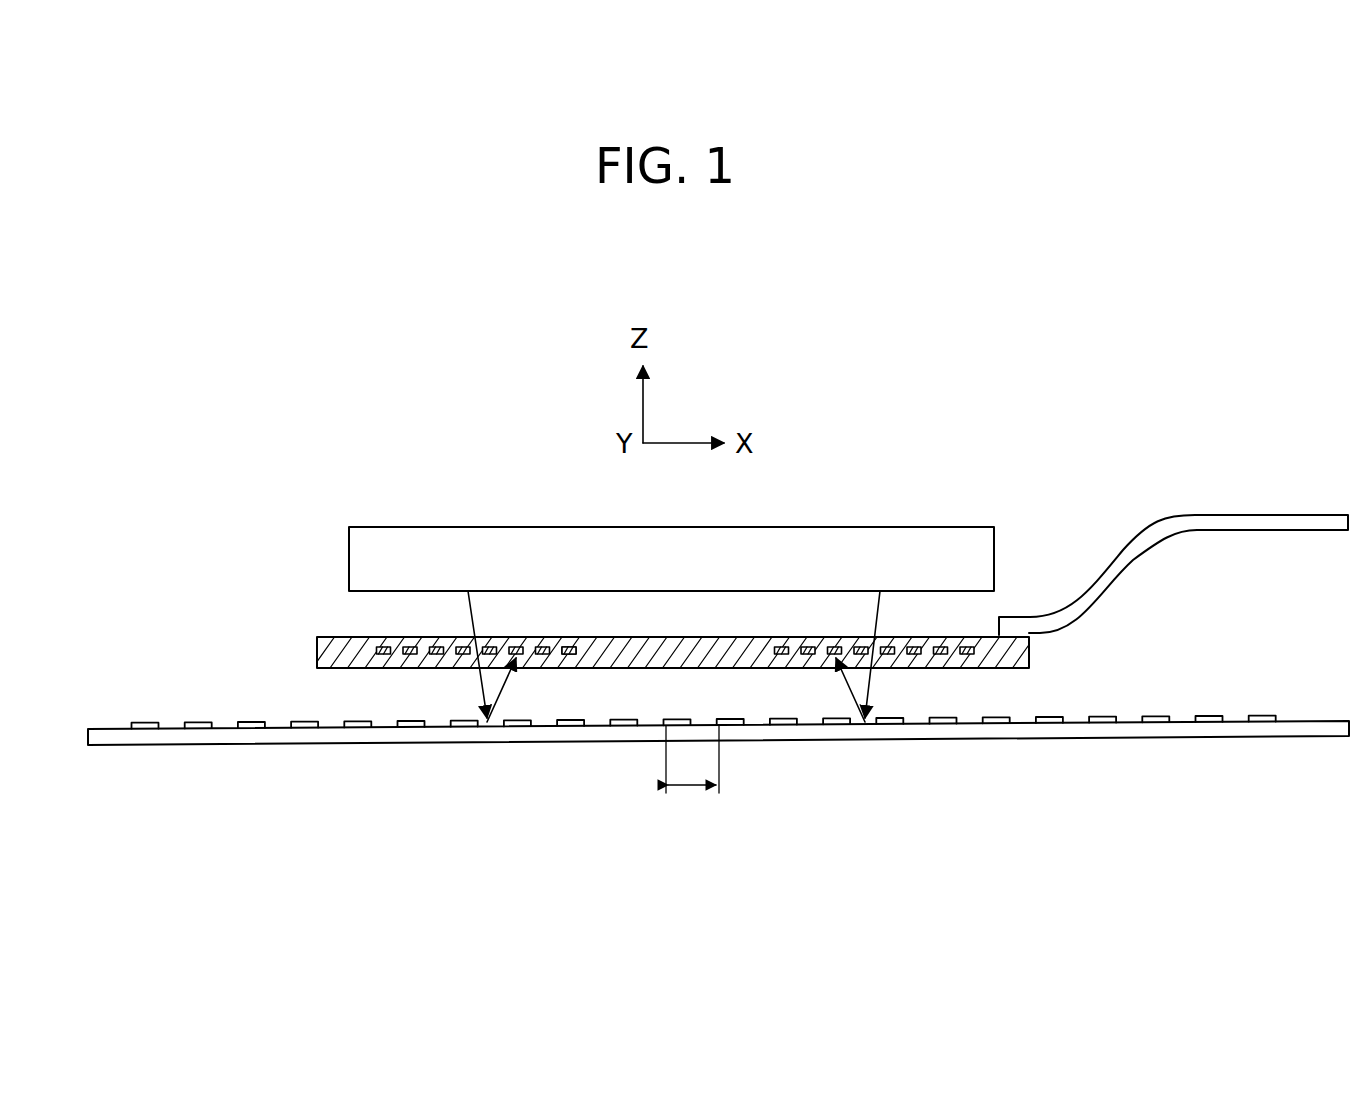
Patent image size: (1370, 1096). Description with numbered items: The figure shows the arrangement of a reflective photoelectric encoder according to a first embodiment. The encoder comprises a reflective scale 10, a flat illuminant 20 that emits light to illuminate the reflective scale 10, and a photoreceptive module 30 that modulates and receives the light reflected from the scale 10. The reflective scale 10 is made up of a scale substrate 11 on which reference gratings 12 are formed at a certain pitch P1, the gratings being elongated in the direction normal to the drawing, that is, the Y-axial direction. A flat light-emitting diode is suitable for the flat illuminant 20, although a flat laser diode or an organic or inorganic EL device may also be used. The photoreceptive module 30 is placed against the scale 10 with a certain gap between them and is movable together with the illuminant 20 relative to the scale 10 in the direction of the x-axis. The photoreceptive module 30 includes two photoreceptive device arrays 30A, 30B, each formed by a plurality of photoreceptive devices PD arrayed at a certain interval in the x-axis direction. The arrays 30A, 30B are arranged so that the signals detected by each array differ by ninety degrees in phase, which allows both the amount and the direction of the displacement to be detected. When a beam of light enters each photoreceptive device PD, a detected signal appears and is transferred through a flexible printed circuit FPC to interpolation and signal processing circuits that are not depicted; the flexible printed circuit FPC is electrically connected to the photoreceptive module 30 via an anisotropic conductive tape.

The reflective scale 10 is at (117, 728).
The scale substrate 11 is at (572, 745).
The reference gratings 12 is at (253, 722).
The flat illuminant 20 is at (500, 527).
The photoreceptive module 30 is at (317, 657).
The photoreceptive device array 30A is at (356, 650).
The photoreceptive device array 30B is at (978, 648).
The photoreceptive device PD is at (566, 655).
The flexible printed circuit FPC is at (1216, 516).
The pitch P1 is at (692, 776).